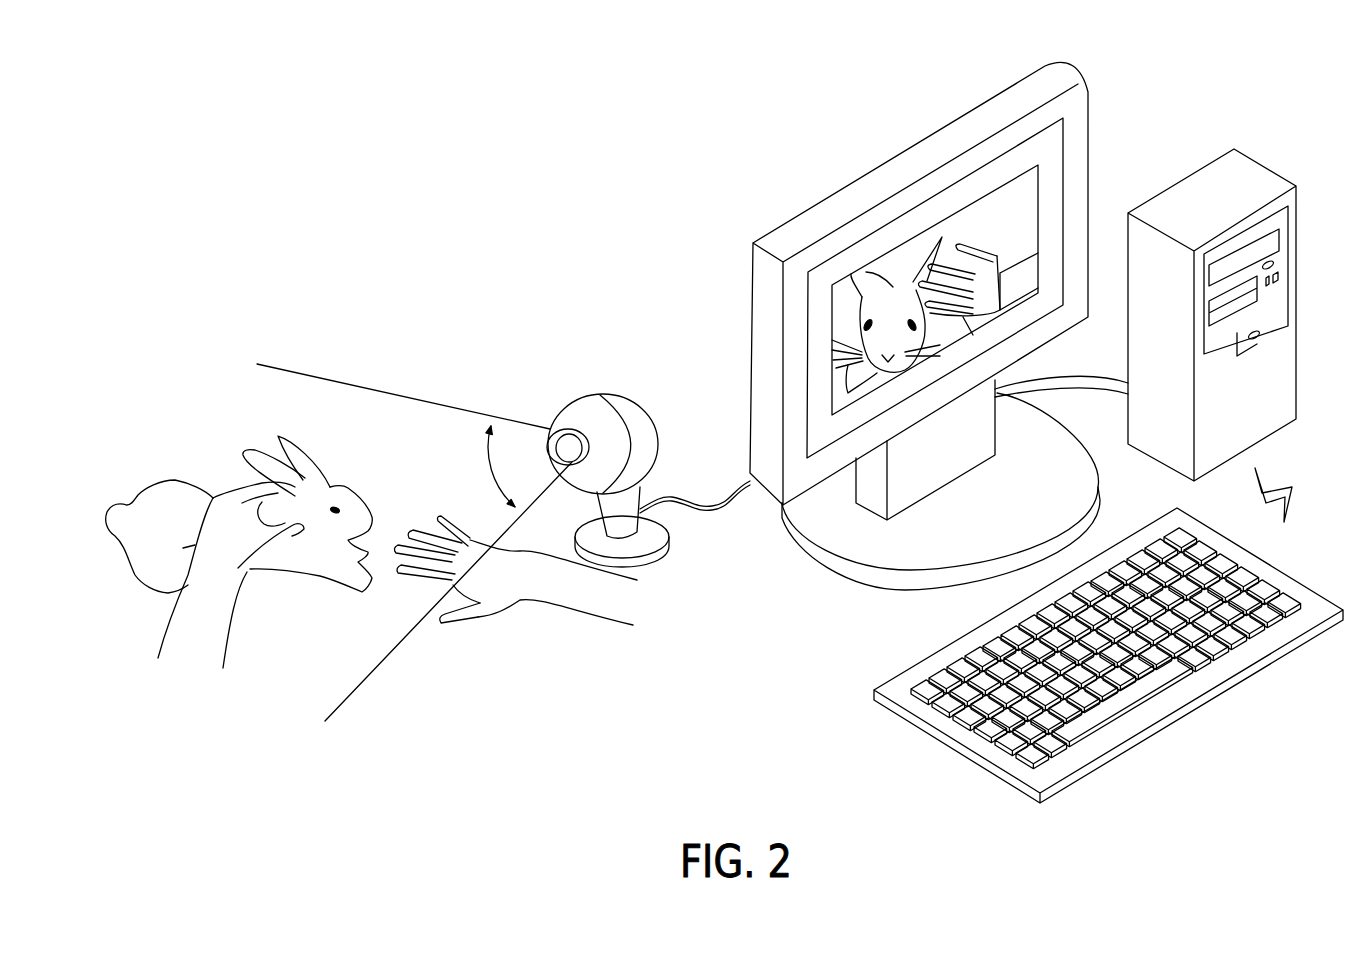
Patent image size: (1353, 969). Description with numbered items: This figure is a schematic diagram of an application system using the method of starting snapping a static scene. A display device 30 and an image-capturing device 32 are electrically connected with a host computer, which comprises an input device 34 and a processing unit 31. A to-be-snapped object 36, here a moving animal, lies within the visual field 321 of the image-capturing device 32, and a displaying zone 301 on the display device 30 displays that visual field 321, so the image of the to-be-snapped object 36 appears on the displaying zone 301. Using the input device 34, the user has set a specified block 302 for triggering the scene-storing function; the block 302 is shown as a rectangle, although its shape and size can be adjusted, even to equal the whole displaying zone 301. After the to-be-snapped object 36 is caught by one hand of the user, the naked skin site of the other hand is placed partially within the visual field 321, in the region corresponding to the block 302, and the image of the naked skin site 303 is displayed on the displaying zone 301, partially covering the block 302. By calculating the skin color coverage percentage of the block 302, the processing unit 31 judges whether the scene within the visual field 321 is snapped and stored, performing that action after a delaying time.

The display device 30 is at (888, 168).
The displaying zone 301 is at (1002, 215).
The block 302 is at (1018, 282).
The naked skin site 303 is at (993, 262).
The processing unit 31 is at (1232, 174).
The image-capturing device 32 is at (600, 418).
The visual field 321 is at (497, 468).
The input device 34 is at (1117, 730).
The to-be-snapped object 36 is at (298, 567).